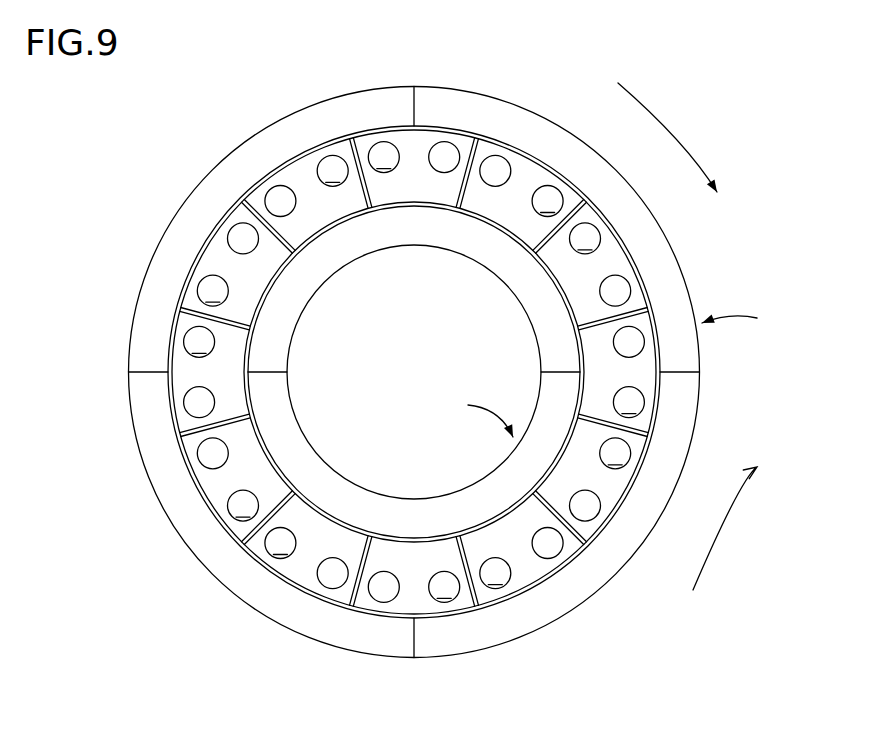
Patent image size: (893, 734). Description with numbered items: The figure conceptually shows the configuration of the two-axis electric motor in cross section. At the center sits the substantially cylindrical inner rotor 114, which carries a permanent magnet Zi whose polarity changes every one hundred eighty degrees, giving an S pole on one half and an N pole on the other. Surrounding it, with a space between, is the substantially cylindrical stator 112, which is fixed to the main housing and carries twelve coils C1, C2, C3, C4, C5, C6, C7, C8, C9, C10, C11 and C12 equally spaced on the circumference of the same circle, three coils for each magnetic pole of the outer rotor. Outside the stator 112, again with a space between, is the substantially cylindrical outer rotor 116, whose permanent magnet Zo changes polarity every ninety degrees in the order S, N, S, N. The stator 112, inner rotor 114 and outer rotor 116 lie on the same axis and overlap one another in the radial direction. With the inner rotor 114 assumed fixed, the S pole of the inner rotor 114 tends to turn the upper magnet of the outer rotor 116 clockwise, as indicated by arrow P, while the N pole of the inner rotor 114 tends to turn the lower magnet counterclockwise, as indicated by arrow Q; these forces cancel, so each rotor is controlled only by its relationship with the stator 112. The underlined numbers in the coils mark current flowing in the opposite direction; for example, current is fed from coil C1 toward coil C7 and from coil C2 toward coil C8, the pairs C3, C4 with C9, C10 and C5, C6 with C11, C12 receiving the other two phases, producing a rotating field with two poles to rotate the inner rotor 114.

The stator 112 is at (307, 143).
The inner rotor 114 is at (443, 258).
The outer rotor 116 is at (699, 253).
The coil C1 is at (185, 380).
The coil C2 is at (215, 263).
The coil C3 is at (300, 175).
The coil C4 is at (425, 140).
The coil C5 is at (535, 177).
The coil C6 is at (612, 258).
The coil C7 is at (643, 370).
The coil C8 is at (612, 487).
The coil C9 is at (528, 570).
The coil C10 is at (407, 605).
The coil C11 is at (295, 570).
The coil C12 is at (215, 488).
The arrow indicating clockwise direction P is at (667, 137).
The arrow indicating counterclockwise direction Q is at (729, 528).
The permanent magnet of the outer rotor Zo is at (745, 323).
The permanent magnet of the inner rotor Zi is at (478, 415).